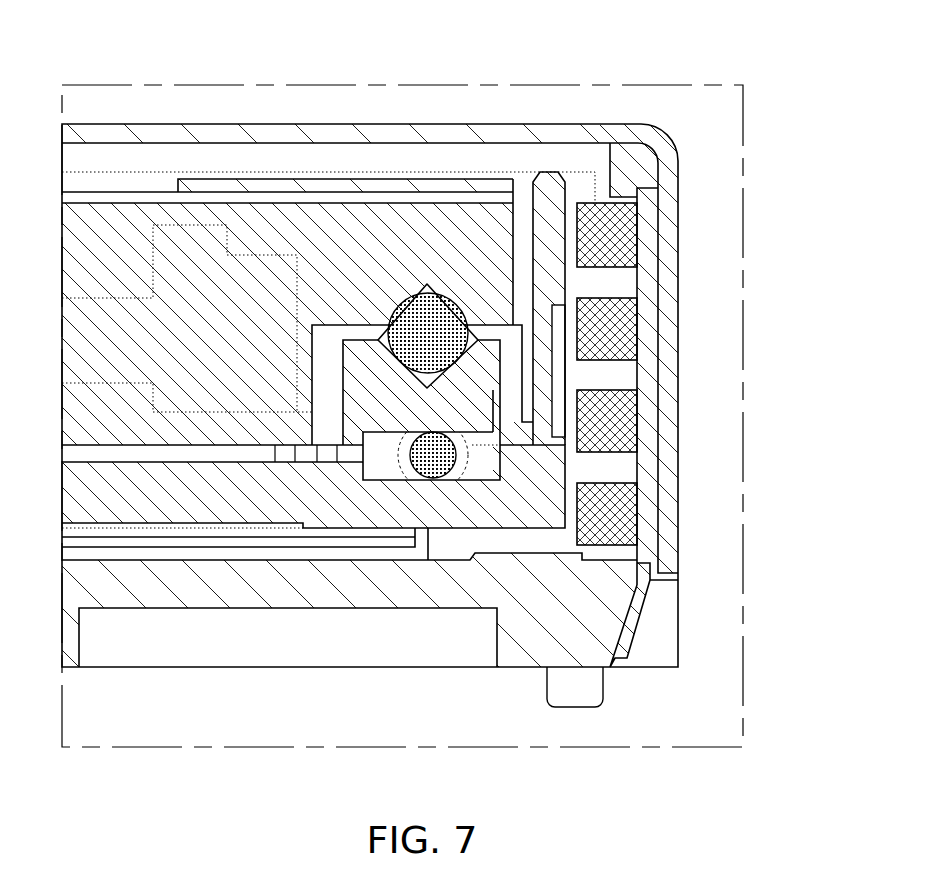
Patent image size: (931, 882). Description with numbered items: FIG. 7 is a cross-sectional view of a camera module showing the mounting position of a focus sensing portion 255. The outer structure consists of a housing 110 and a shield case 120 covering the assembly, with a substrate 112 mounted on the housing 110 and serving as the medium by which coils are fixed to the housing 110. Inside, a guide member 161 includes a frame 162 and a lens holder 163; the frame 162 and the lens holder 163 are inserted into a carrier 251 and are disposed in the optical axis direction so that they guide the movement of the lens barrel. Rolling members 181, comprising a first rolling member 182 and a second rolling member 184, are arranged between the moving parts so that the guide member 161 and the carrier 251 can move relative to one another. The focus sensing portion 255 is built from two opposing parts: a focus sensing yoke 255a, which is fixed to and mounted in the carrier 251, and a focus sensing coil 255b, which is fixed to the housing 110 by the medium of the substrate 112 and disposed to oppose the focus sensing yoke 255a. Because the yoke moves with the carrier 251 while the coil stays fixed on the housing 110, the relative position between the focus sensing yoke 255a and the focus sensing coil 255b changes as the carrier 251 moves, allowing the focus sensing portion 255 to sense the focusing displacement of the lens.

The housing 110 is at (568, 657).
The substrate 112 is at (647, 547).
The shield case 120 is at (427, 137).
The guide member 161 is at (535, 30).
The frame 162 is at (490, 352).
The lens holder 163 is at (450, 222).
The rolling members 181 is at (268, 30).
The first rolling member 182 is at (413, 453).
The second rolling member 184 is at (392, 318).
The carrier 251 is at (328, 508).
The focus sensing portion 255 is at (807, 357).
The focus sensing yoke 255a is at (558, 413).
The focus sensing coil 255b is at (620, 330).